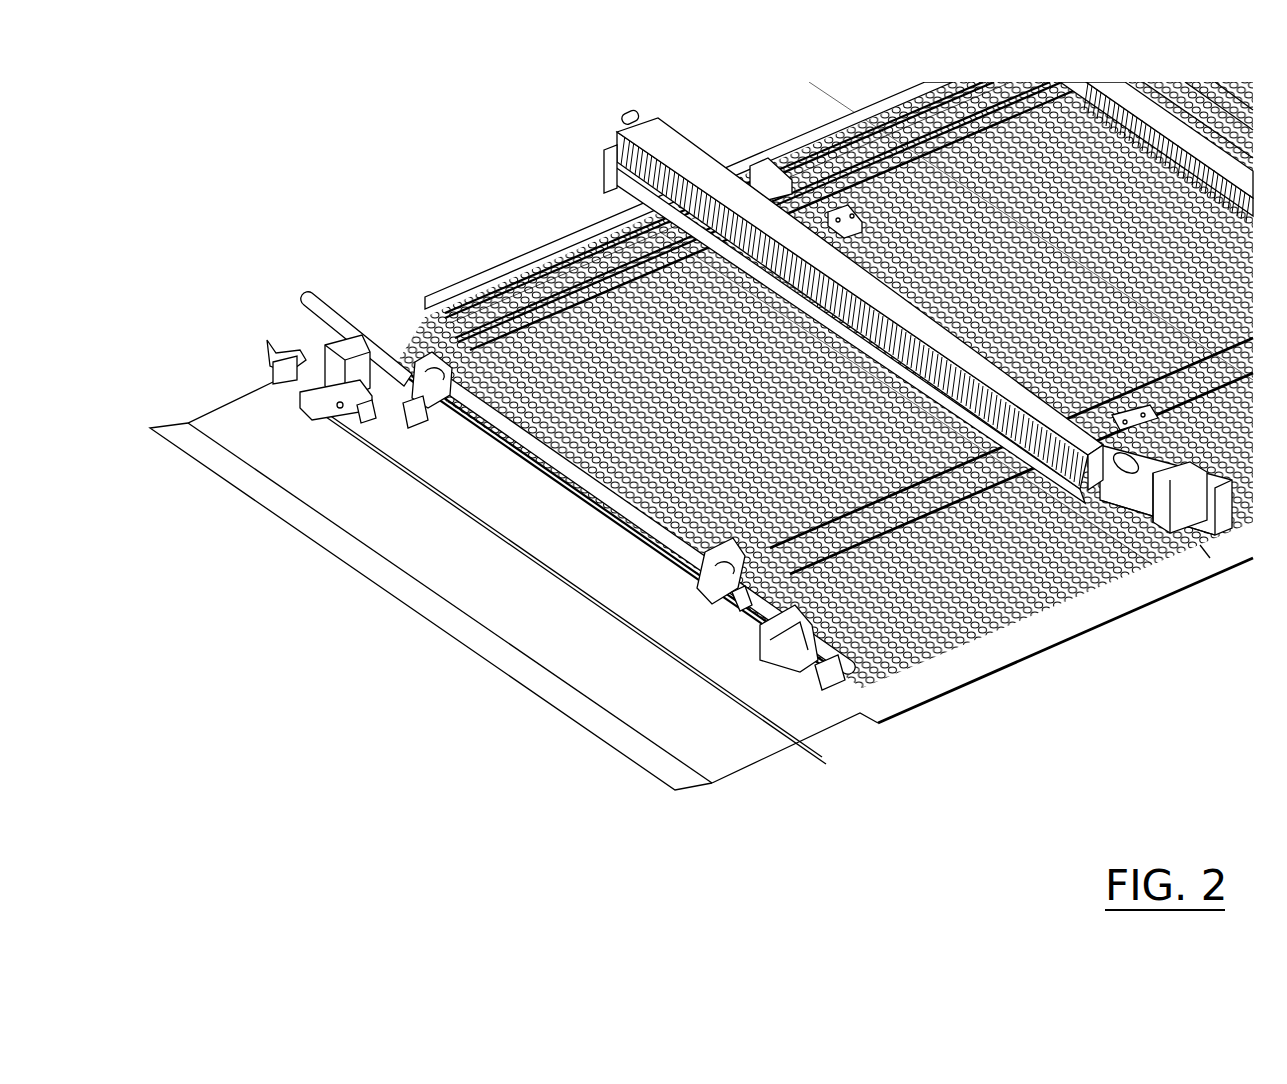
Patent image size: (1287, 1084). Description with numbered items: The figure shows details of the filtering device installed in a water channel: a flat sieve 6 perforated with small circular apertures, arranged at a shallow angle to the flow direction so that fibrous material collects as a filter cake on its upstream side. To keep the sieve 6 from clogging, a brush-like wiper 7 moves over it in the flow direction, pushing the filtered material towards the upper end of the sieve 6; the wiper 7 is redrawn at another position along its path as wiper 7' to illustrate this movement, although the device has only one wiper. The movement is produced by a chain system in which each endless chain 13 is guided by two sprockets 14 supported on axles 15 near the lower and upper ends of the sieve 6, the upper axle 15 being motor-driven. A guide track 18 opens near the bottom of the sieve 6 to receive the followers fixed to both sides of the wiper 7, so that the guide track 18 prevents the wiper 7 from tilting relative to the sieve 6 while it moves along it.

The sieve 6 is at (950, 608).
The wiper 7 is at (701, 586).
The wiper 7' is at (863, 292).
The endless chain 13 is at (540, 312).
The sprocket 14 is at (430, 380).
The axle 15 is at (560, 465).
The guide track 18 is at (278, 370).